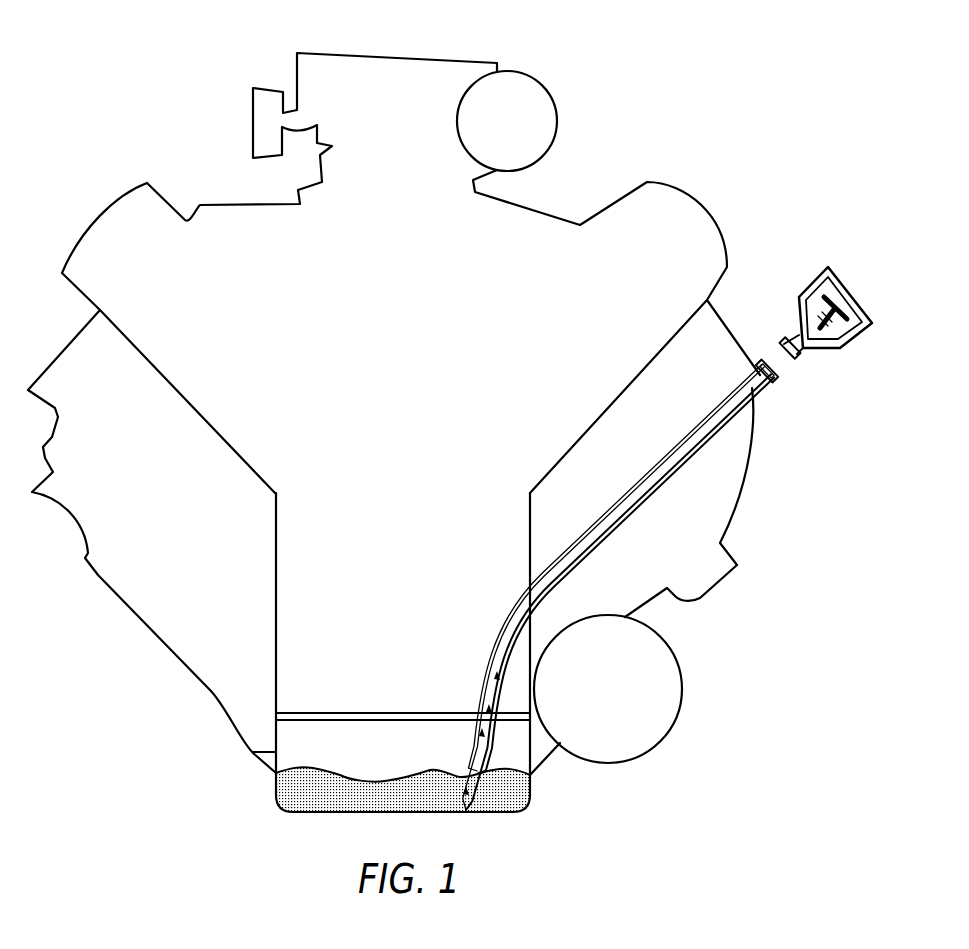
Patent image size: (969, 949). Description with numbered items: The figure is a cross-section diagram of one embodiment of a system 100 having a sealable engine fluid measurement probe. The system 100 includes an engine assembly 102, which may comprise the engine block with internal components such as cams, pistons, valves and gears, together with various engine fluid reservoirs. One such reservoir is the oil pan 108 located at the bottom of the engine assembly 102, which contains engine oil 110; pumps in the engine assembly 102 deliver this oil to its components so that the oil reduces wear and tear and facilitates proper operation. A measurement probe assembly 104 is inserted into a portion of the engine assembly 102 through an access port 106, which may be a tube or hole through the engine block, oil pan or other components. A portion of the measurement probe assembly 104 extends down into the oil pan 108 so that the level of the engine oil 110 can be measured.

The system 100 is at (127, 57).
The engine assembly 102 is at (147, 183).
The measurement probe assembly 104 is at (828, 268).
The access port 106 is at (777, 374).
The oil pan 108 is at (253, 753).
The engine oil 110 is at (317, 795).